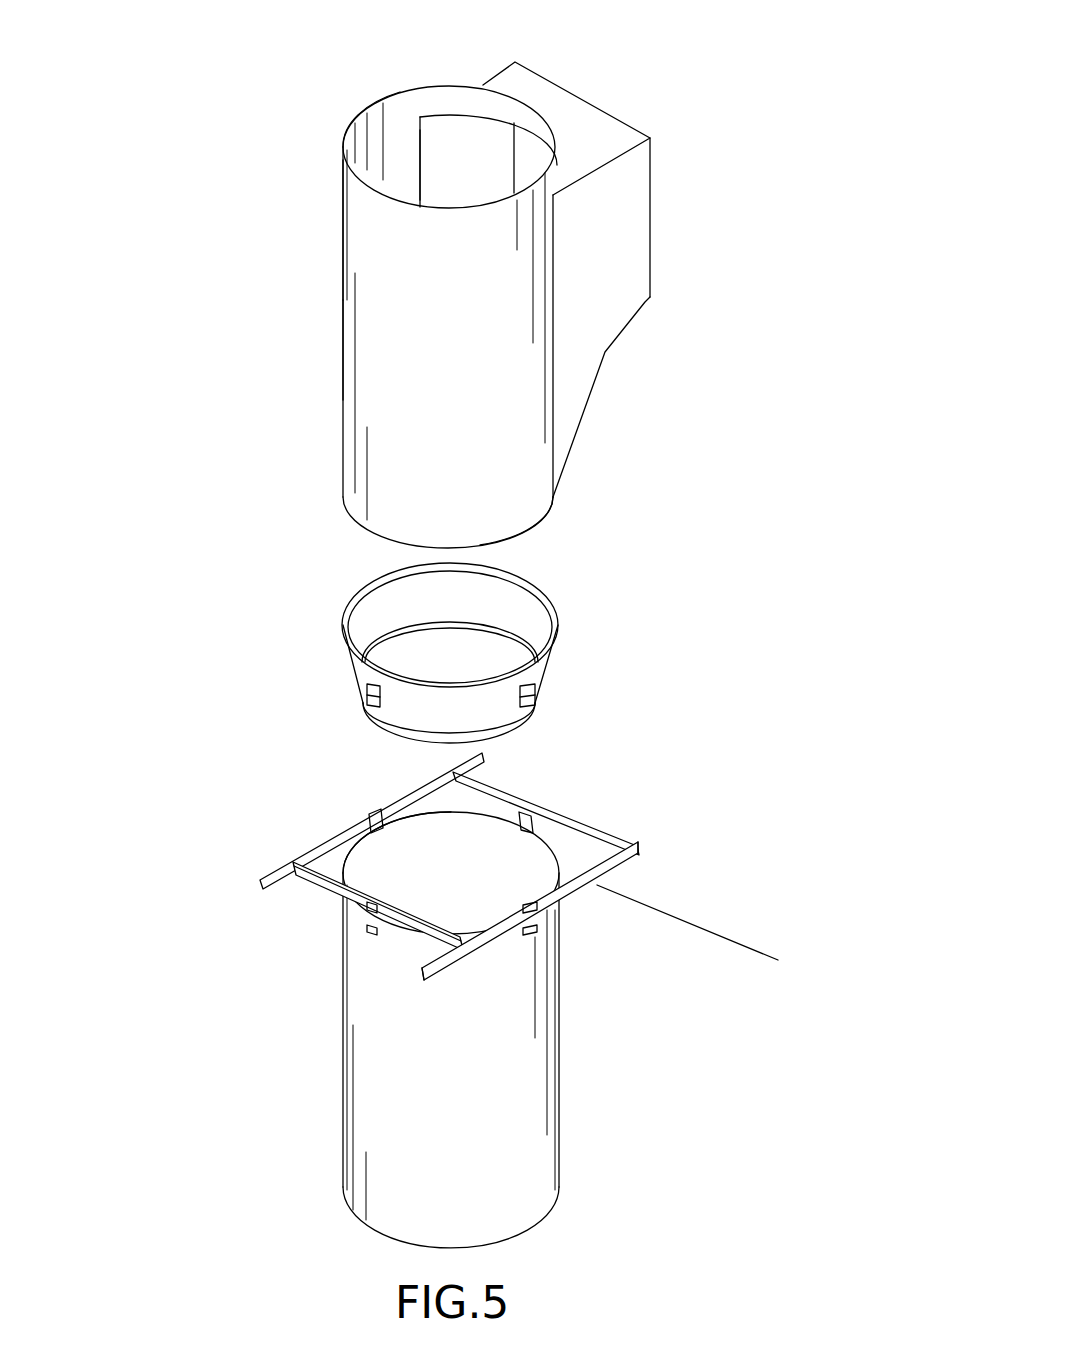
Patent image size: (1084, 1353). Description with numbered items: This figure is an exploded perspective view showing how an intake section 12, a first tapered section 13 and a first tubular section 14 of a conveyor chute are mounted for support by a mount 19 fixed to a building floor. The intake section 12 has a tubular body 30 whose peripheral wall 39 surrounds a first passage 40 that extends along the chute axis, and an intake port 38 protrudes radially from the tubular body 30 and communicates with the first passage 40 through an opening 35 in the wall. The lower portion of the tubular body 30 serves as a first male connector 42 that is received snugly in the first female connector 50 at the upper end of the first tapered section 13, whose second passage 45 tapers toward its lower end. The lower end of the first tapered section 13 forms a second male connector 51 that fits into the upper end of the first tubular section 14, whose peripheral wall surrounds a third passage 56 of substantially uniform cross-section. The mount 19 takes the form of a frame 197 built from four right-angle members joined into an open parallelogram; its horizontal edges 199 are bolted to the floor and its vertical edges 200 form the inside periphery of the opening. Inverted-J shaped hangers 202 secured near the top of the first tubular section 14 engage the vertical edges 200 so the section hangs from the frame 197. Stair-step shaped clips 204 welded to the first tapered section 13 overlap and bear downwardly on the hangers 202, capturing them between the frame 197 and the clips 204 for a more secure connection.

The intake section 12 is at (427, 358).
The first tapered section 13 is at (456, 723).
The first tubular section 14 is at (450, 1065).
The mount 19 is at (587, 838).
The tubular body 30 is at (338, 349).
The opening 35 is at (450, 130).
The intake port 38 is at (650, 203).
The peripheral wall 39 is at (377, 100).
The first passage 40 is at (388, 155).
The first male connector 42 is at (533, 525).
The second passage 45 is at (408, 612).
The first female connector 50 is at (490, 570).
The second male connector 51 is at (467, 625).
The third passage 56 is at (432, 897).
The frame 197 is at (647, 873).
The horizontal edges 199 is at (305, 885).
The vertical edges 200 is at (413, 798).
The hangers 202 is at (372, 820).
The clips 204 is at (527, 690).